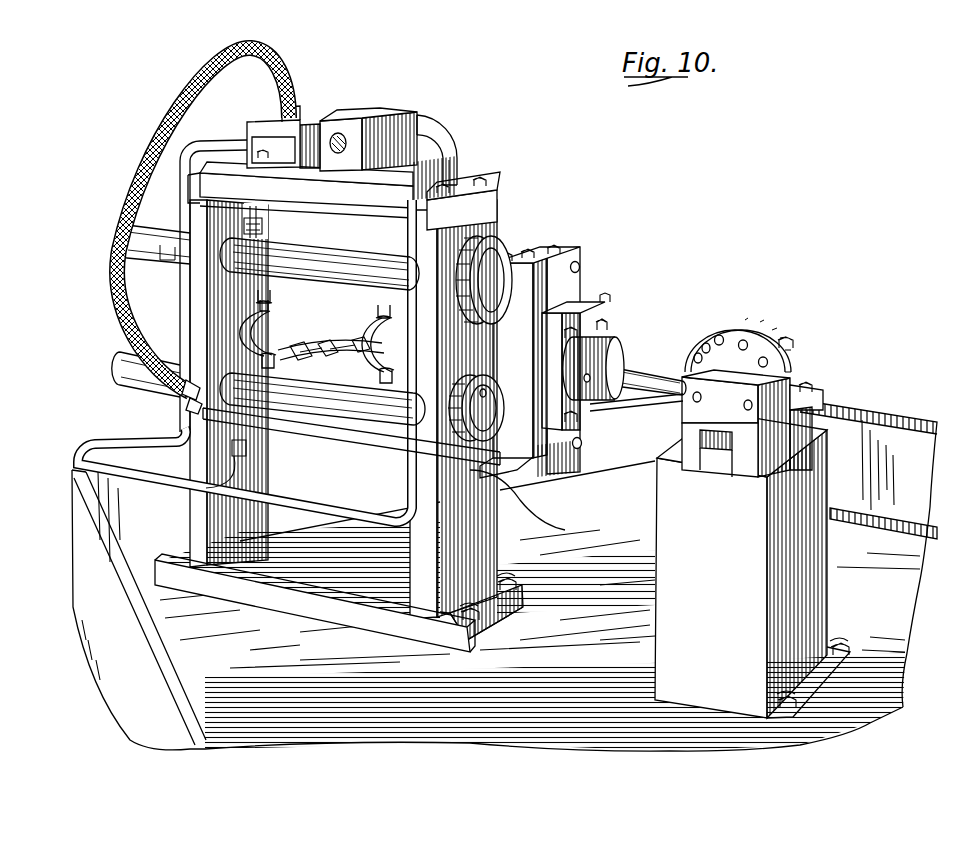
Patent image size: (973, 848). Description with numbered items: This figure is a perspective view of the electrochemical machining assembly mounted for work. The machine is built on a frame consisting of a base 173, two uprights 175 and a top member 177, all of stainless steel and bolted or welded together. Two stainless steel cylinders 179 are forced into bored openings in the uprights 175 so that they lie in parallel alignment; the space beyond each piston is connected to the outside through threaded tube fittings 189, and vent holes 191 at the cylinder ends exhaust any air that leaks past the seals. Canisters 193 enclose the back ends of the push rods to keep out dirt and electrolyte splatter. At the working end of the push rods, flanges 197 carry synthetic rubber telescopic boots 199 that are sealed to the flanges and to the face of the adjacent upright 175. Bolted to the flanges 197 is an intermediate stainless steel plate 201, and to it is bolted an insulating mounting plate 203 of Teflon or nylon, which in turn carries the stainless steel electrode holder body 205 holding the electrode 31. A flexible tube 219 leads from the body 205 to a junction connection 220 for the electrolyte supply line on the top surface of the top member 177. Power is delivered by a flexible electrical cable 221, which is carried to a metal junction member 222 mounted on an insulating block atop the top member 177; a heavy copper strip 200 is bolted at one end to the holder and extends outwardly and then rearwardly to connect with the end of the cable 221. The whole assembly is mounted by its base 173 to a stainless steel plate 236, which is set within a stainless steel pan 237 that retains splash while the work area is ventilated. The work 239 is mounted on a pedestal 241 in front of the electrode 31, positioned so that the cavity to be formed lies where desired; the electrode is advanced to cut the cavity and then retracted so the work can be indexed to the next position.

The electrode 31 is at (648, 370).
The base 173 is at (245, 574).
The uprights 175 is at (222, 320).
The top member 177 is at (455, 190).
The cylinders 179 is at (342, 266).
The threaded tube fittings 189 is at (278, 350).
The vent holes 191 is at (264, 216).
The canisters 193 is at (122, 240).
The flanges 197 is at (445, 395).
The telescopic boots 199 is at (486, 252).
The copper strip 200 is at (545, 515).
The intermediate stainless steel plate 201 is at (540, 256).
The insulating mounting plate 203 is at (582, 270).
The body 205 is at (600, 318).
The flexible tube 219 is at (452, 142).
The junction connection 220 is at (388, 118).
The flexible electrical cable 221 is at (170, 136).
The junction member 222 is at (283, 118).
The stainless steel plate 236 is at (305, 648).
The pan 237 is at (876, 432).
The work 239 is at (755, 336).
The pedestal 241 is at (728, 519).